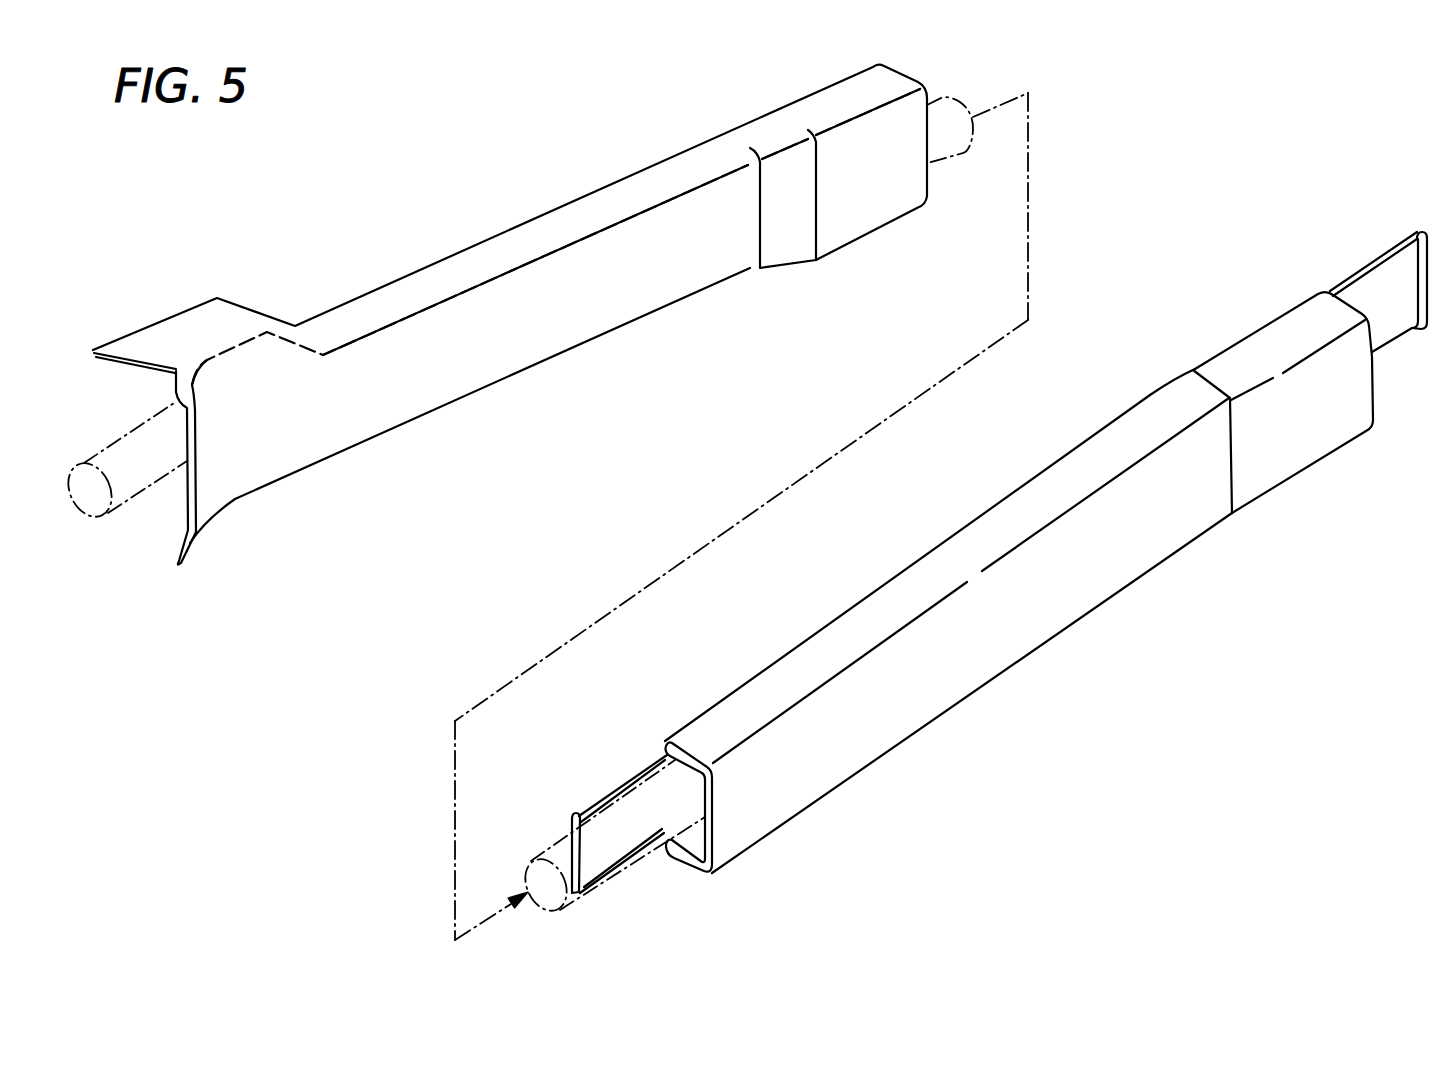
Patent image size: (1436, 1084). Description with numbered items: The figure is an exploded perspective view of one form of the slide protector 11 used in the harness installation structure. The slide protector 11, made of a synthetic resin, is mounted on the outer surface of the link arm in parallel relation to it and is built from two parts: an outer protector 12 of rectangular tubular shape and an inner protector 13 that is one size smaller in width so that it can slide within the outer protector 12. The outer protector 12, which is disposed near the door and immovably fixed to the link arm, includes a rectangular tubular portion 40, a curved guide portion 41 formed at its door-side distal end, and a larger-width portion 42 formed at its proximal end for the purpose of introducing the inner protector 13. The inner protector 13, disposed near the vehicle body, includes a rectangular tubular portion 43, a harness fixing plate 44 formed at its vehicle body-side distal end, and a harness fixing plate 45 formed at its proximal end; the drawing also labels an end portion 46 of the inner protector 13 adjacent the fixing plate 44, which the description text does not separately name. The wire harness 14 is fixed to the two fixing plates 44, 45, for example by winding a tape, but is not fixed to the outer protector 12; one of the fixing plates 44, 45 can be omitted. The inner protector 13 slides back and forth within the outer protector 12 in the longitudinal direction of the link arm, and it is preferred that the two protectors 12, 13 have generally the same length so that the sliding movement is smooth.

The slide protector 11 is at (741, 367).
The outer protector 12 is at (510, 322).
The inner protector 13 is at (999, 543).
The wire harness 14 is at (122, 500).
The rectangular tubular portion 40 is at (565, 350).
The curved guide portion 41 is at (220, 472).
The larger-width portion 42 is at (880, 229).
The rectangular tubular portion 43 is at (1038, 647).
The harness fixing plate 44 is at (1372, 263).
The harness fixing plate 45 is at (607, 795).
The end portion of tube 46 is at (1322, 425).